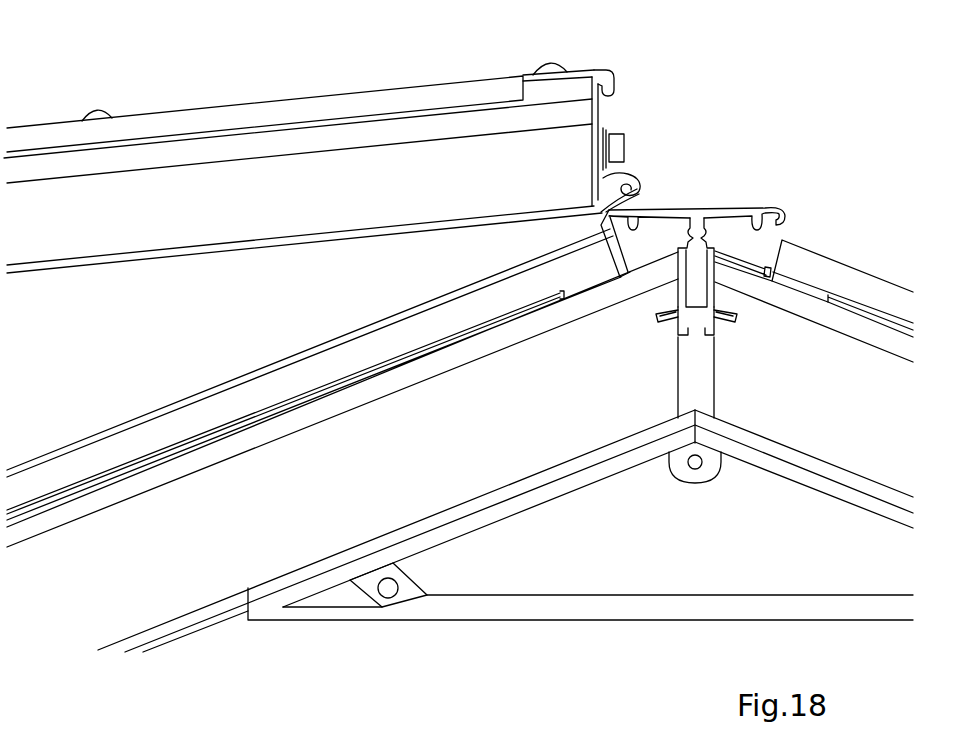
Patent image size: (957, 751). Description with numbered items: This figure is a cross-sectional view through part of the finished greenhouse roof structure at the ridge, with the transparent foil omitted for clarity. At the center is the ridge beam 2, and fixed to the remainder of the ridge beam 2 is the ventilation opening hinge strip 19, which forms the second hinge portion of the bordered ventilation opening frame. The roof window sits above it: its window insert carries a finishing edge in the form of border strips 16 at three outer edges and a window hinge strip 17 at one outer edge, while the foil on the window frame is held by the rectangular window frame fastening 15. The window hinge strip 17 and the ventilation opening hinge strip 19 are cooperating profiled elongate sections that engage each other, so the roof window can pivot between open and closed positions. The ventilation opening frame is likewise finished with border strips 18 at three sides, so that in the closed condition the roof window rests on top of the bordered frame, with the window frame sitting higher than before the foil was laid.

The border strips 16 is at (128, 203).
The window frame fastening 15 is at (610, 79).
The window hinge strip 17 is at (632, 178).
The ventilation opening hinge strip 19 is at (640, 196).
The ridge beam 2 is at (745, 207).
The border strips 18 is at (111, 448).